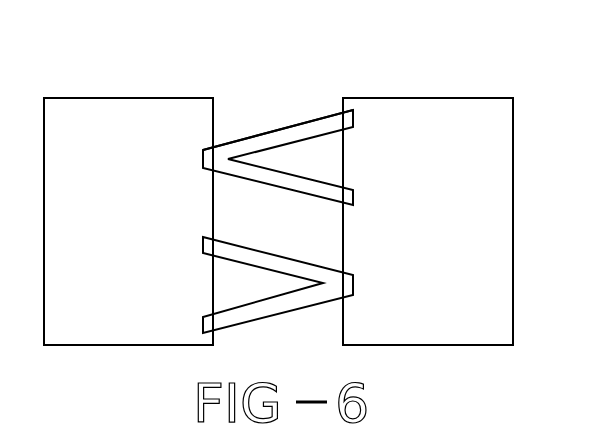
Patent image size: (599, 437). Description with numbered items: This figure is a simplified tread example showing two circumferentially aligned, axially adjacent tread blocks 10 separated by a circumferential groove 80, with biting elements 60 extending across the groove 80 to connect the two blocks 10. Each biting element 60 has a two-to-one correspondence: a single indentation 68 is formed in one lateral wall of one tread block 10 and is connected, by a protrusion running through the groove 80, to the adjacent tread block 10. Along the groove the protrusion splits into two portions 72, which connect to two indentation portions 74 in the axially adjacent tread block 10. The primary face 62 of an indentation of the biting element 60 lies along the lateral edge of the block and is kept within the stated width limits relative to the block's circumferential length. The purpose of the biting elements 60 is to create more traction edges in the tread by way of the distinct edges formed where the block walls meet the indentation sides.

The tread block 10 is at (89, 128).
The biting element 60 is at (275, 94).
The primary face 62 is at (203, 158).
The single indentation 68 is at (347, 292).
The protrusion portions 72 is at (316, 124).
The indentation portions 74 is at (354, 197).
The circumferential groove 80 is at (275, 233).